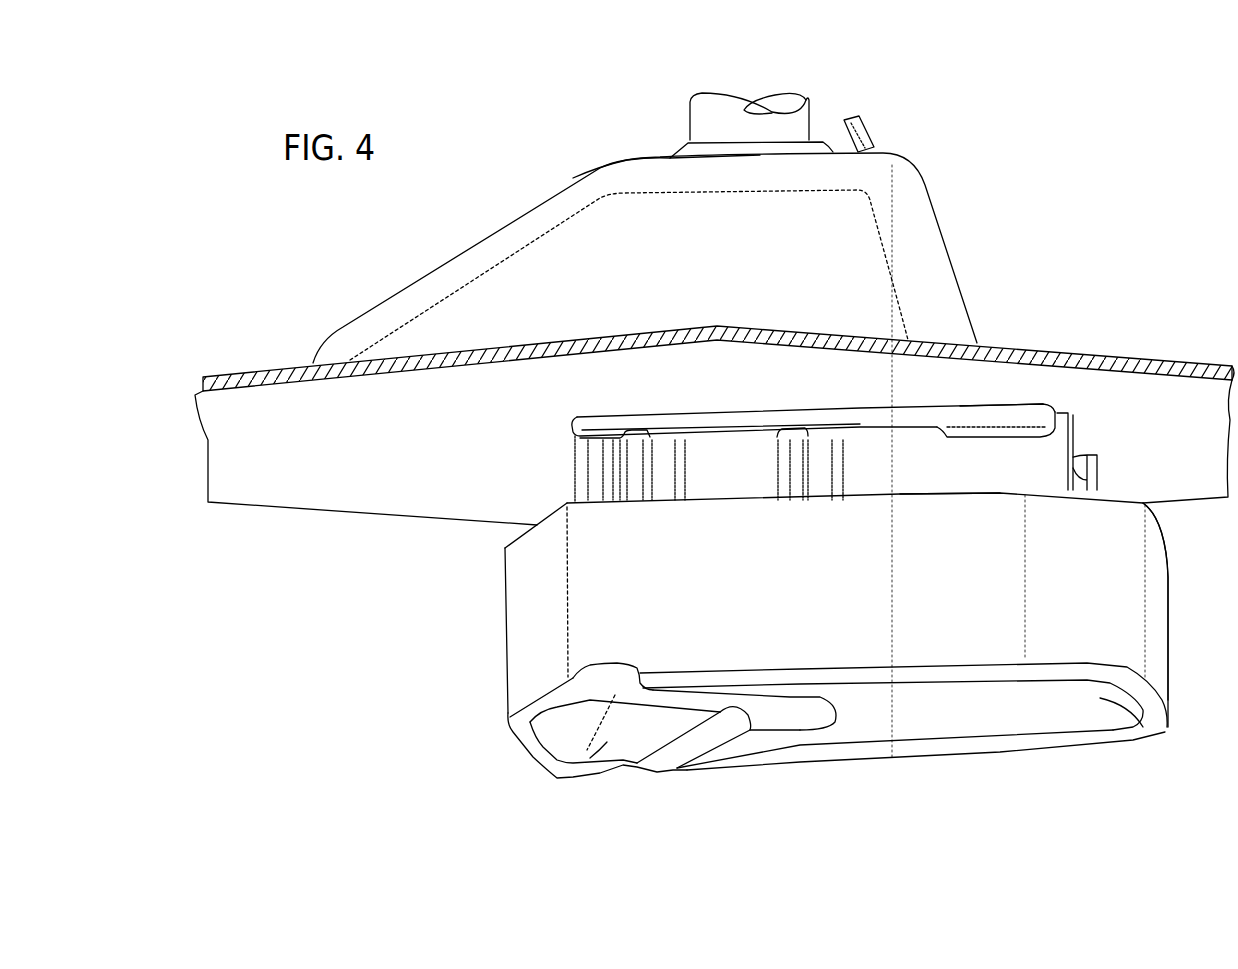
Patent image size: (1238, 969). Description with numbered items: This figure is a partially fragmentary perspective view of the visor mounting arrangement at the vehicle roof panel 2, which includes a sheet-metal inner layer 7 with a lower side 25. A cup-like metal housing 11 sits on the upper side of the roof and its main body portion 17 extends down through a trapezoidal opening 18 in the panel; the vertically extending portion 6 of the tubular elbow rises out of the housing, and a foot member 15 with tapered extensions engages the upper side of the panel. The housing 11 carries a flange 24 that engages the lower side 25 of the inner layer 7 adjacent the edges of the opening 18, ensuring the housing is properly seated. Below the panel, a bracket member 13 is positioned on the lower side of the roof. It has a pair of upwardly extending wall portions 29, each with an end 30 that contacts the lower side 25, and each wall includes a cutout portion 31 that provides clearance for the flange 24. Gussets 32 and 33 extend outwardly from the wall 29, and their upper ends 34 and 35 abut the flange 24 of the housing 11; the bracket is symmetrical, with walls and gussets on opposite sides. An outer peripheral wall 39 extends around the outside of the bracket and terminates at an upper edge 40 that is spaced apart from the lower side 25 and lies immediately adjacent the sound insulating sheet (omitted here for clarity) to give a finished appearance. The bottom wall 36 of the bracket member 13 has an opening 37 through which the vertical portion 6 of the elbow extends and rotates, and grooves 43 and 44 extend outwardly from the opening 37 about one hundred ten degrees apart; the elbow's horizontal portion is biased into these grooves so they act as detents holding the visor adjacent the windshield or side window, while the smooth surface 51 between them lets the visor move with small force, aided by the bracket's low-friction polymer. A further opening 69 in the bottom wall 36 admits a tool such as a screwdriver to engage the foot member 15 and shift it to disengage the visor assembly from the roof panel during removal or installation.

The vehicle roof panel 2 is at (1125, 362).
The vertically extending portion 6 is at (688, 134).
The inner layer 7 is at (1209, 372).
The housing 11 is at (951, 167).
The bracket member 13 is at (1175, 570).
The foot member 15 is at (887, 117).
The main body portion 17 is at (833, 253).
The trapezoidal opening 18 is at (572, 424).
The flange 24 is at (995, 403).
The lower side 25 is at (1138, 437).
The wall portions 29 is at (935, 480).
The end 30 is at (1079, 466).
The cutout portion 31 is at (1012, 435).
The gusset 32 is at (665, 492).
The gusset 33 is at (815, 473).
The upper end 34 is at (627, 431).
The upper end 35 is at (790, 432).
The bottom wall 36 is at (1165, 732).
The opening 37 is at (760, 722).
The outer peripheral wall 39 is at (1103, 598).
The upper edge 40 is at (512, 537).
The groove 43 is at (530, 750).
The groove 44 is at (637, 767).
The smooth surface 51 is at (549, 768).
The opening 69 is at (858, 729).